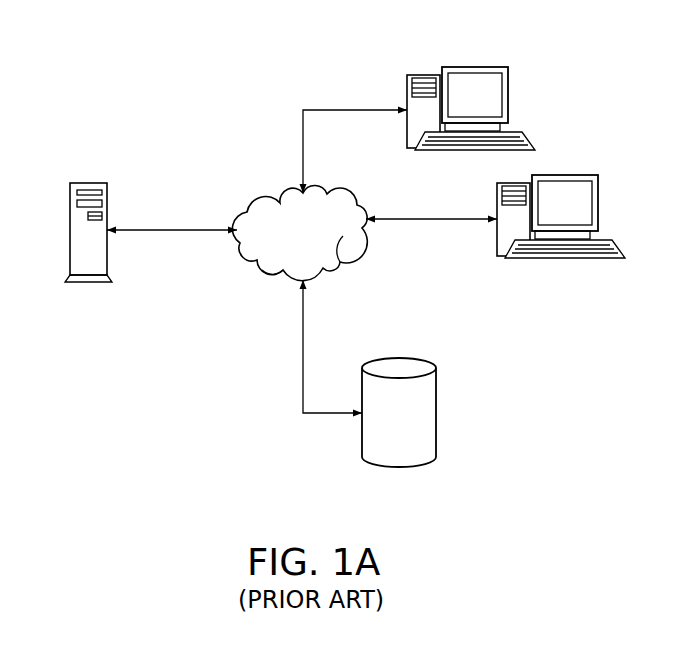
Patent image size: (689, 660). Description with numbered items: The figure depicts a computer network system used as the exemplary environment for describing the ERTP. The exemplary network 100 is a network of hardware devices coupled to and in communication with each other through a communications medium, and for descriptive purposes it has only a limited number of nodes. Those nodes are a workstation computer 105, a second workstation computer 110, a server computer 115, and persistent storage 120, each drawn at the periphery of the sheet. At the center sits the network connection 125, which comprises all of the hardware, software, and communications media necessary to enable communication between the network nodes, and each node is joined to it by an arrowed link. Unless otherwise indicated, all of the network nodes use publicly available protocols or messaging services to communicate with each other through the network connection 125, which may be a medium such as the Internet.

The network 100 is at (342, 236).
The workstation computer 105 is at (508, 96).
The workstation computer 110 is at (598, 204).
The server computer 115 is at (70, 200).
The persistent storage 120 is at (436, 386).
The network connection 125 is at (322, 246).